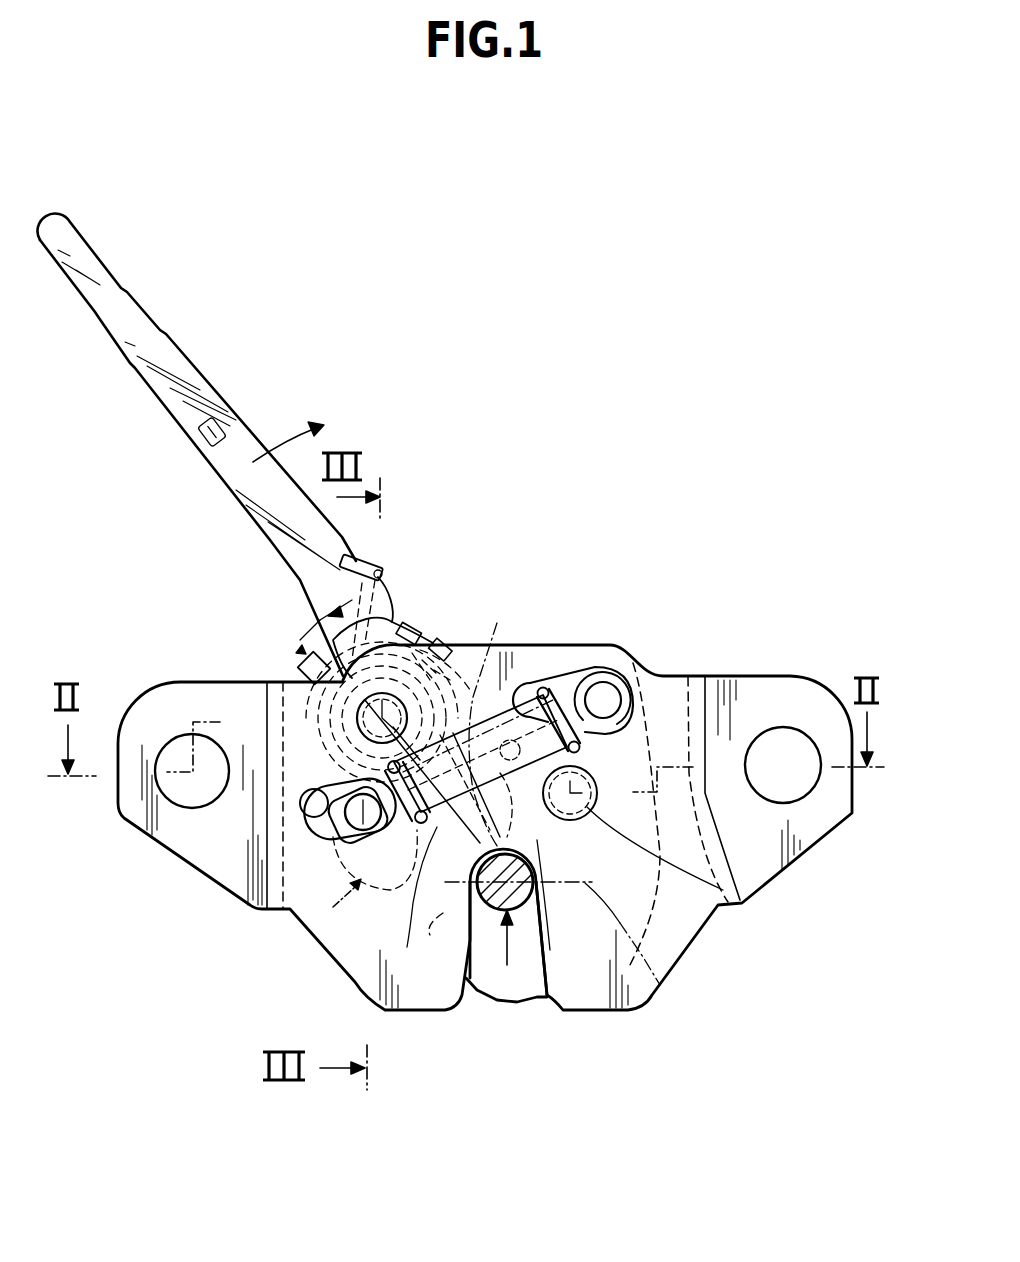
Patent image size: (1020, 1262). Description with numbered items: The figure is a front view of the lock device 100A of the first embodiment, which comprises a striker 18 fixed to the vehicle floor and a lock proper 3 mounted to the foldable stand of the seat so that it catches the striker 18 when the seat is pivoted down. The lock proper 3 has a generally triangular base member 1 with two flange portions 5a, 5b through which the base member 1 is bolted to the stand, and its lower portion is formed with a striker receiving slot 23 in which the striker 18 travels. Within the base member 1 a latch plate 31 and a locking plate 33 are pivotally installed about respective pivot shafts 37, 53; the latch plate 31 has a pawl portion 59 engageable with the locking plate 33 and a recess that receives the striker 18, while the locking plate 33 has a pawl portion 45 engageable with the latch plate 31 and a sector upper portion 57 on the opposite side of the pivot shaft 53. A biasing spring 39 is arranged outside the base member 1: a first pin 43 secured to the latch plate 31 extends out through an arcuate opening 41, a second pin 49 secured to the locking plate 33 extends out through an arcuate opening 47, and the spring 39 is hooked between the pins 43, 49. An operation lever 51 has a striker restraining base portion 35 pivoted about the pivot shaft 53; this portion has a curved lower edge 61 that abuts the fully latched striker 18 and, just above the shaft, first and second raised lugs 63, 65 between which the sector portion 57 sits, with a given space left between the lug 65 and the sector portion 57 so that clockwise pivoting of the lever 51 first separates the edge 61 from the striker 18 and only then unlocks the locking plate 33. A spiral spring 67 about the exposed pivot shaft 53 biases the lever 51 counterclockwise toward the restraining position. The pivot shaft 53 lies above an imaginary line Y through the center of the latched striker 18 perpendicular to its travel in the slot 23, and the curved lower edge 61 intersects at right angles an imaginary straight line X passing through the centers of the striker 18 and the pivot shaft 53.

The lock device 100A is at (556, 537).
The base member 1 is at (657, 950).
The lock proper 3 is at (678, 655).
The flange portion 5a is at (180, 836).
The flange portion 5b is at (818, 820).
The striker 18 is at (540, 907).
The striker receiving slot 23 is at (540, 940).
The latch plate 31 is at (488, 967).
The locking plate 33 is at (330, 930).
The striker restraining base portion 35 is at (282, 569).
The pivot shaft 37 is at (723, 905).
The biasing spring 39 is at (540, 688).
The arcuate opening 41 is at (562, 698).
The first pin 43 is at (605, 695).
The pawl portion 45 is at (407, 837).
The arcuate opening 47 is at (313, 803).
The second pin 49 is at (377, 780).
The operation lever 51 is at (180, 368).
The pivot shaft 53 is at (363, 713).
The sector upper portion 57 is at (405, 626).
The pawl portion 59 is at (413, 850).
The curved lower edge 61 is at (540, 855).
The first raised lug 63 is at (440, 645).
The second raised lug 65 is at (300, 666).
The spiral spring 67 is at (355, 562).
The imaginary straight line X is at (484, 729).
The imaginary line Y is at (635, 948).